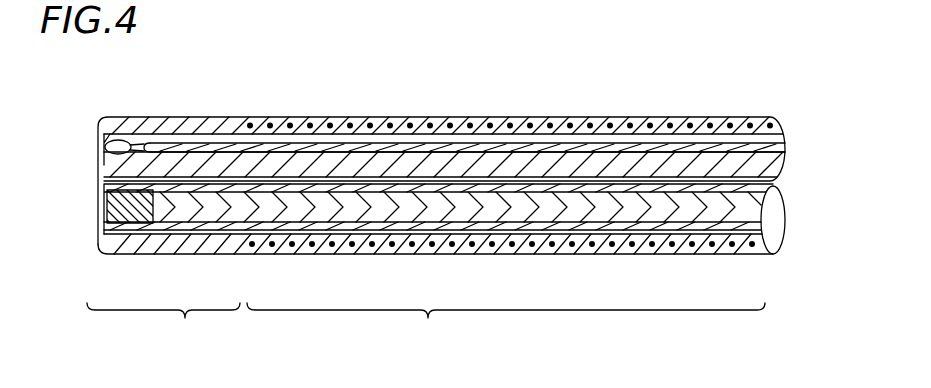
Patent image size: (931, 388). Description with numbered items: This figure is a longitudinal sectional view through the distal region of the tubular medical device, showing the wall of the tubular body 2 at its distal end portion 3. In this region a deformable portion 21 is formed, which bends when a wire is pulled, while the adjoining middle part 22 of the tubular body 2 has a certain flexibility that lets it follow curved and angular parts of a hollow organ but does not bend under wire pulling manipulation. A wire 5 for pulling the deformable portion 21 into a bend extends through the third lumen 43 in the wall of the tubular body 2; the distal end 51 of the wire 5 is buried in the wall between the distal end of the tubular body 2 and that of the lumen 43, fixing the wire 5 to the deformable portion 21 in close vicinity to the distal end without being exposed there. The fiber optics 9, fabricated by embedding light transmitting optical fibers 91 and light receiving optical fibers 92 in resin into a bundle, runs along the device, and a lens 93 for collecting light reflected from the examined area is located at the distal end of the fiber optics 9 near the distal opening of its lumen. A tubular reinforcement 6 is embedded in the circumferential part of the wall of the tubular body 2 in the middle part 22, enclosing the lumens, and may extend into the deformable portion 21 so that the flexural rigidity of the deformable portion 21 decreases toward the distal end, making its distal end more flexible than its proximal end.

The tubular body 2 is at (682, 128).
The distal end portion 3 is at (190, 115).
The wire 5 is at (340, 143).
The third lumen 43 is at (477, 140).
The distal end of the wire 51 is at (118, 140).
The tubular reinforcement 6 is at (302, 246).
The fiber optics 9 is at (481, 225).
The light transmitting optical fibers 91 is at (777, 188).
The light receiving optical fibers 92 is at (750, 215).
The lens 93 is at (108, 204).
The deformable portion 21 is at (163, 328).
The middle part 22 is at (506, 328).